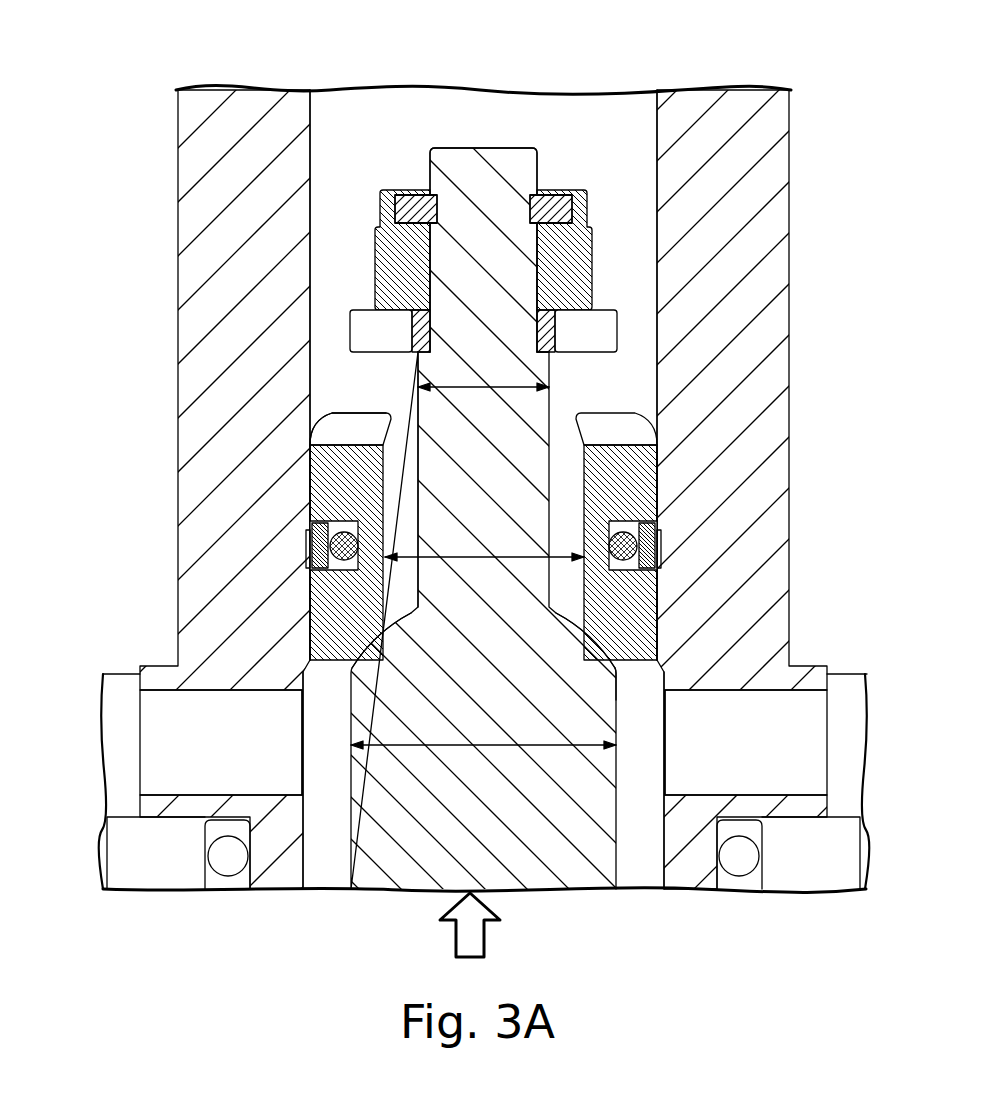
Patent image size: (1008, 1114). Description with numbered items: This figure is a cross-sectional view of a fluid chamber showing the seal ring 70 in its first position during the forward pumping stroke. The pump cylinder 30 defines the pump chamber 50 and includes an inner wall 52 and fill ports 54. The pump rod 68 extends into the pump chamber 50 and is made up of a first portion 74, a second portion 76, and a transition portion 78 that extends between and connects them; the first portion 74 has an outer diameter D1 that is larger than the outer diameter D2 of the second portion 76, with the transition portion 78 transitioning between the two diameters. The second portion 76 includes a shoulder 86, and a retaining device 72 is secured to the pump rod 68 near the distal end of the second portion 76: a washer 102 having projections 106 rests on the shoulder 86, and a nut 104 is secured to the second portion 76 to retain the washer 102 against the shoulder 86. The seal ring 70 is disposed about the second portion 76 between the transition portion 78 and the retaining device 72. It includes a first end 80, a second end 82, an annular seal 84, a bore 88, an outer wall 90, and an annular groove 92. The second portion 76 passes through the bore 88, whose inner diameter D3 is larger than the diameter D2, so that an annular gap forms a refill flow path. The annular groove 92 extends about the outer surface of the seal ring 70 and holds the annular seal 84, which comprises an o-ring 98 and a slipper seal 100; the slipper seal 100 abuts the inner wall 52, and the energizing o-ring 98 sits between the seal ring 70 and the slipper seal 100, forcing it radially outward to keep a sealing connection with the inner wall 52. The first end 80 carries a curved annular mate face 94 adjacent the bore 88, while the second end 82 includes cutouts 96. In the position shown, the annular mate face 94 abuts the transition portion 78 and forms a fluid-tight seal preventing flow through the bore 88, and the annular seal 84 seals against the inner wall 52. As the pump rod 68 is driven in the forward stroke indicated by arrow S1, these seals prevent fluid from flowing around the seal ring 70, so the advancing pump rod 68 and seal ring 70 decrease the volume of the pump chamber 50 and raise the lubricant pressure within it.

The pump cylinder 30 is at (177, 225).
The pump chamber 50 is at (602, 128).
The inner wall 52 is at (310, 110).
The fill ports 54 is at (188, 742).
The pump rod 68 is at (327, 830).
The seal ring 70 is at (290, 445).
The retaining device 72 is at (343, 200).
The first portion 74 is at (532, 862).
The second portion 76 is at (485, 183).
The transition portion 78 is at (575, 655).
The first end 80 is at (620, 412).
The second end 82 is at (663, 669).
The annular seal 84 is at (683, 532).
The shoulder 86 is at (548, 362).
The bore 88 is at (410, 445).
The outer wall 90 is at (312, 619).
The annular groove 92 is at (328, 517).
The annular mate face 94 is at (365, 655).
The cutouts 96 is at (630, 425).
The o-ring 98 is at (640, 505).
The slipper seal 100 is at (657, 542).
The washer 102 is at (620, 317).
The nut 104 is at (571, 256).
The projections 106 is at (600, 334).
The outer diameter of first portion D1 is at (540, 744).
The outer diameter of second portion D2 is at (510, 385).
The inner diameter of bore D3 is at (507, 555).
The forward stroke arrow S1 is at (485, 940).